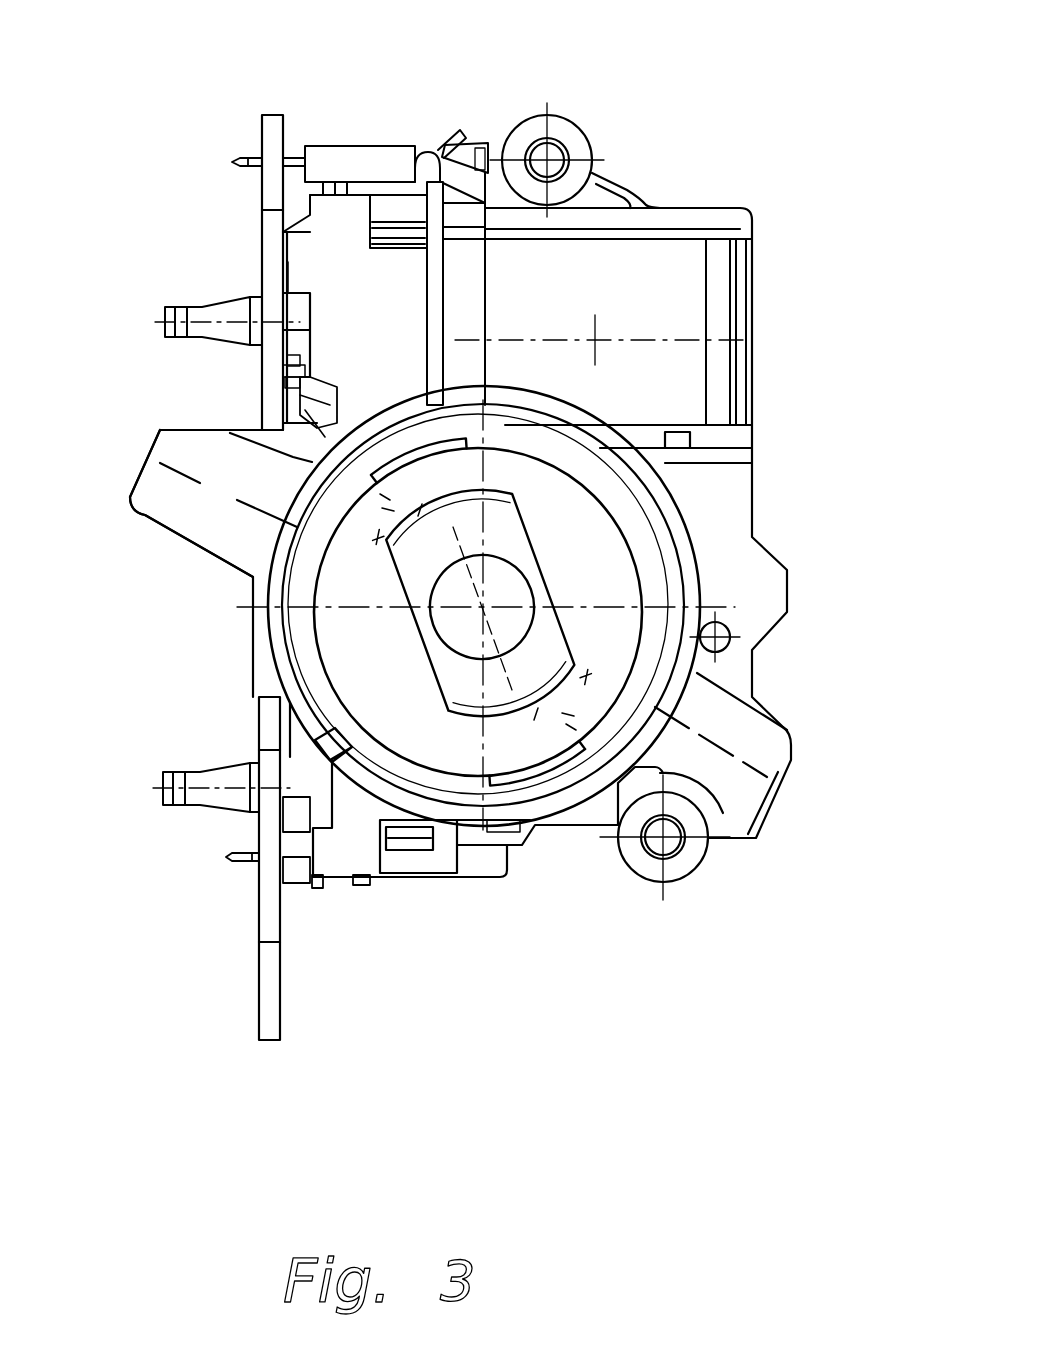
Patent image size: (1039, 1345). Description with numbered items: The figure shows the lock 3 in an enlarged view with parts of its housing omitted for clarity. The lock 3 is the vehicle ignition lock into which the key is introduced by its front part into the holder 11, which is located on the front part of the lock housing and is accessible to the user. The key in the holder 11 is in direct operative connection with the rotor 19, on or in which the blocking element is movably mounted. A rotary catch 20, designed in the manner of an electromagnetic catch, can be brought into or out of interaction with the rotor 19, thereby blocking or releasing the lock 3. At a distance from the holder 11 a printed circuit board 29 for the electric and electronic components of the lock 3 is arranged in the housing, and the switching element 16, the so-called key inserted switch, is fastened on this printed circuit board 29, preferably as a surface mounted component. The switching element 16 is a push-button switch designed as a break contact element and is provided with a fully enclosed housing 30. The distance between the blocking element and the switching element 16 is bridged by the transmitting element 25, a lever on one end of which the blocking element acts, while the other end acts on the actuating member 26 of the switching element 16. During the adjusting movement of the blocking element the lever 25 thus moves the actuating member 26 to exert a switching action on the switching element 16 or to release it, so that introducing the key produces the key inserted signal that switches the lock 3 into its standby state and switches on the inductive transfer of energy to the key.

The lock 3 is at (731, 92).
The holder 11 is at (412, 630).
The switching element 16 is at (270, 376).
The rotor 19 is at (566, 500).
The rotary catch 20 is at (665, 290).
The transmitting element 25 is at (280, 460).
The actuating member 26 is at (295, 400).
The printed circuit board 29 is at (285, 258).
The housing 30 is at (295, 350).